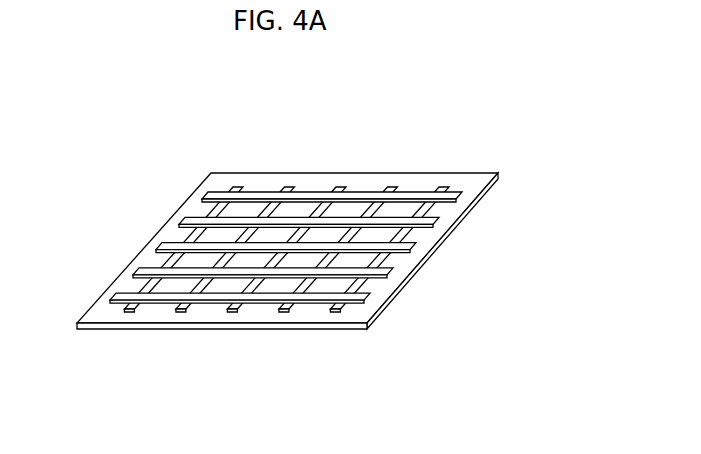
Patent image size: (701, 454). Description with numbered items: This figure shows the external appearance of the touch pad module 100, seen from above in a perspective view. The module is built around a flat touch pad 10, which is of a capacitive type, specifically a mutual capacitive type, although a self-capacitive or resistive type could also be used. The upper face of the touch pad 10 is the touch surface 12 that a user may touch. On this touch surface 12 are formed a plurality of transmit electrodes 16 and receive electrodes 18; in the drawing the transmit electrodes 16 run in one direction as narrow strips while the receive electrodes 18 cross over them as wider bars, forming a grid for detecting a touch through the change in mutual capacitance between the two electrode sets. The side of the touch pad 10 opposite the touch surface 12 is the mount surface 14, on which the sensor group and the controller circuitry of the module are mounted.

The touch pad module 100 is at (307, 428).
The touch pad 10 is at (82, 330).
The touch surface 12 is at (473, 186).
The mount surface 14 is at (450, 246).
The transmit electrodes 16 is at (445, 187).
The receive electrodes 18 is at (204, 200).